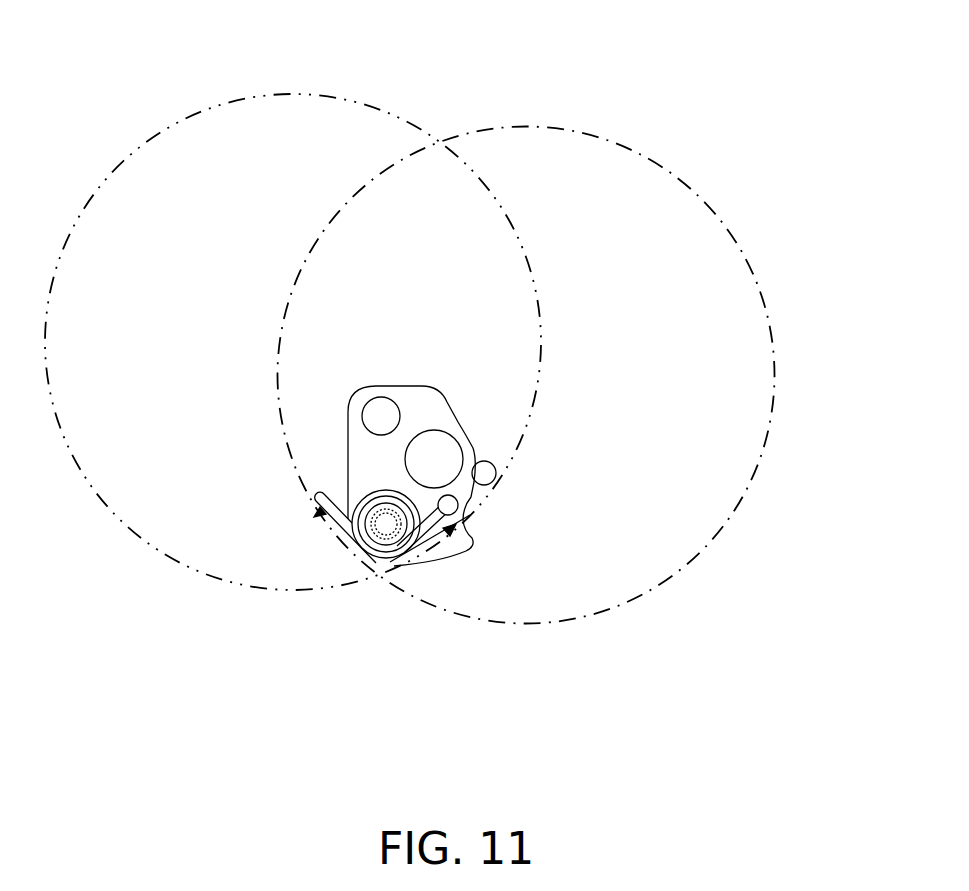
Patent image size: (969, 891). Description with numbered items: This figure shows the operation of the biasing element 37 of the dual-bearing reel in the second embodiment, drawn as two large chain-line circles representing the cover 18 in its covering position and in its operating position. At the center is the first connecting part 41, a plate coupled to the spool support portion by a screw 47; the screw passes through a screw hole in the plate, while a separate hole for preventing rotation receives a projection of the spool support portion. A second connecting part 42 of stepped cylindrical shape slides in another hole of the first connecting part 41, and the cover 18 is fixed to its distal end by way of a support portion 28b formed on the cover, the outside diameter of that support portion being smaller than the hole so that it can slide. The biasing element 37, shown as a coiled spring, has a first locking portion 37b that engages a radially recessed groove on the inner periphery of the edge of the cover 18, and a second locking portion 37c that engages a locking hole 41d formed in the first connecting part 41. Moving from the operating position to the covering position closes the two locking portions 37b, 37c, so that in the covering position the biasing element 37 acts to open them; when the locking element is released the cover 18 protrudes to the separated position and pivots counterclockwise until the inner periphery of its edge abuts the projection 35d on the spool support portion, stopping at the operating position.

The cover 18 is at (410, 317).
The first connecting part 41 is at (378, 386).
The screw 47 is at (437, 440).
The projection 35d is at (495, 477).
The locking hole 41d is at (446, 497).
The biasing element 37 is at (367, 492).
The first locking portion 37b is at (324, 515).
The second locking portion 37c is at (472, 548).
The support portion 28b is at (440, 546).
The second connecting part 42 is at (383, 552).